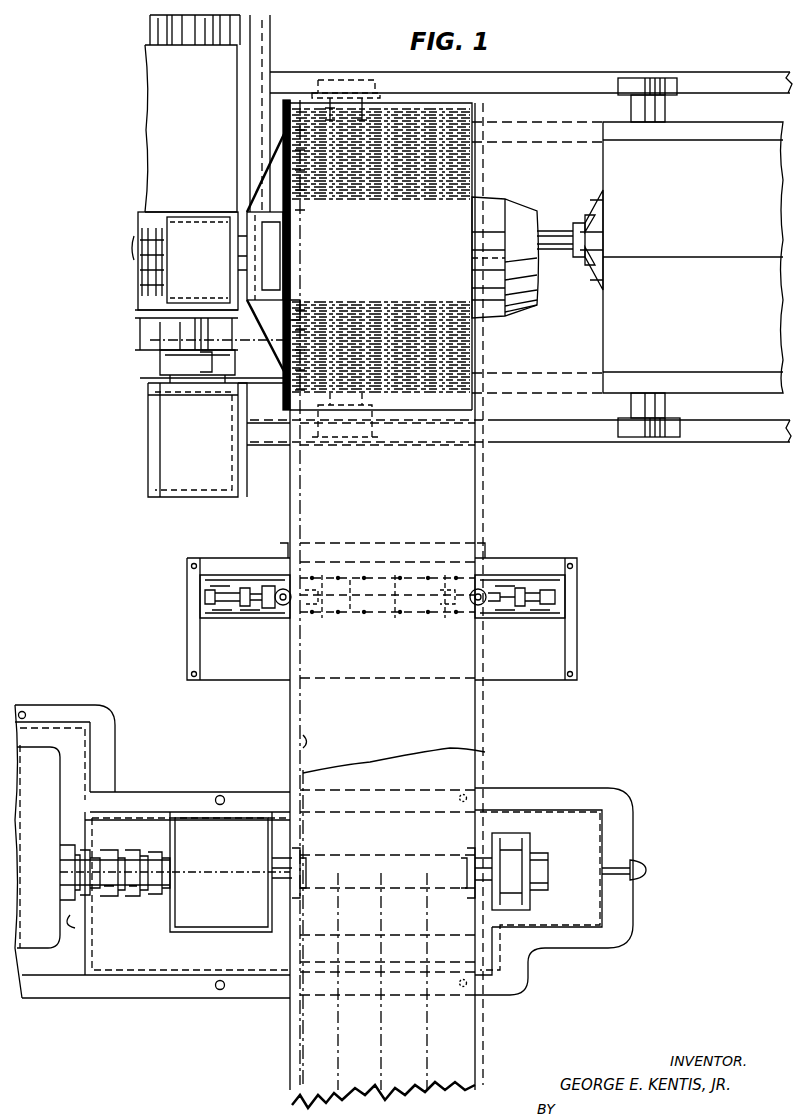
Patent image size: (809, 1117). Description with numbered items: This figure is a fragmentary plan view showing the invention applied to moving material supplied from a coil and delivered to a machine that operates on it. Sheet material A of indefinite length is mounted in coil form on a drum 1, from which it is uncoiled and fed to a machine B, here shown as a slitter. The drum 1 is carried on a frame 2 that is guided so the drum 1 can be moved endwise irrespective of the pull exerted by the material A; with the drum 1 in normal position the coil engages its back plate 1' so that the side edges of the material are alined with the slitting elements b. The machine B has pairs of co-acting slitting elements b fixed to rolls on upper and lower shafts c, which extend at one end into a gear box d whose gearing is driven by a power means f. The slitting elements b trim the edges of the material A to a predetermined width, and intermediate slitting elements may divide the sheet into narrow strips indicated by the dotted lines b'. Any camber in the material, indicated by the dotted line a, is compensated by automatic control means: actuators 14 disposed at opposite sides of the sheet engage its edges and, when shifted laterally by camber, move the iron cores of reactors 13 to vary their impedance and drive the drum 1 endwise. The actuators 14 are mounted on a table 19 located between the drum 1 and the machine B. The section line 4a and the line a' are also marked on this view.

The drum 1 is at (505, 245).
The back plate 1' is at (308, 305).
The frame 2 is at (190, 457).
The sheet material A is at (462, 494).
The section line 4a is at (158, 586).
The reactors 13 is at (207, 600).
The actuators 14 is at (500, 618).
The table 19 is at (236, 666).
The camber a is at (409, 739).
The belt center line a' is at (273, 906).
The power means f is at (52, 775).
The slitting elements b is at (383, 862).
The shafts c is at (290, 870).
The gear box d is at (212, 923).
The machine B is at (556, 985).
The dotted lines indicating narrow strips b' is at (397, 981).